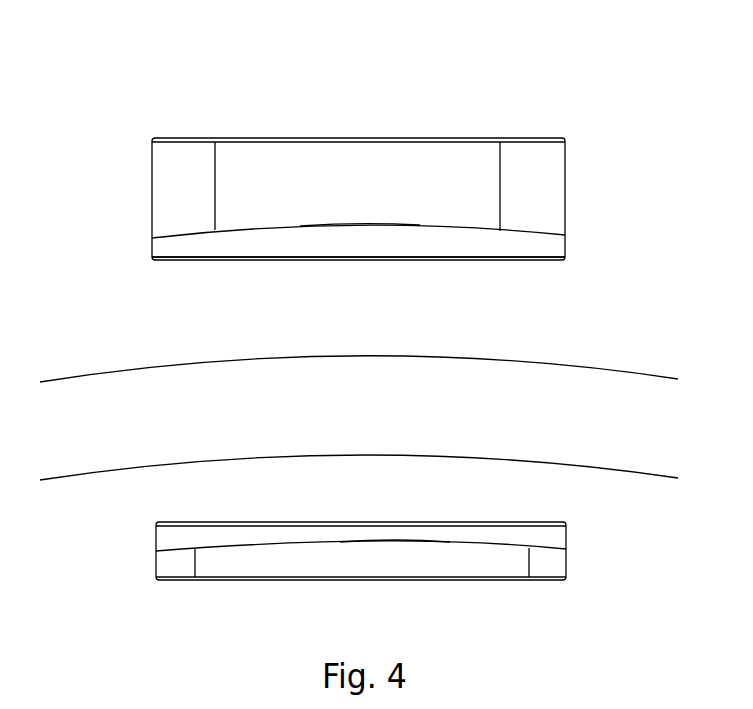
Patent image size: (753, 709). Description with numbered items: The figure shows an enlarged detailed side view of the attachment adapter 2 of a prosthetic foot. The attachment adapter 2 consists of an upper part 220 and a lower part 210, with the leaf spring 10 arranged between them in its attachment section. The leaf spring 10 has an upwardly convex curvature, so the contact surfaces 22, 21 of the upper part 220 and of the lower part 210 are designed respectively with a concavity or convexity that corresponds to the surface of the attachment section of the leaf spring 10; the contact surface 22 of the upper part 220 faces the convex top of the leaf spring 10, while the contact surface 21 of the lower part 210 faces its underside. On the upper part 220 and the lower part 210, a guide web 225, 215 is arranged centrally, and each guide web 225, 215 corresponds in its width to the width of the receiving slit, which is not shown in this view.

The attachment adapter 2 is at (397, 173).
The upper part 220 is at (550, 182).
The guide web 225 is at (550, 246).
The contact surface 22 is at (373, 226).
The leaf spring 10 is at (71, 386).
The contact surface 21 is at (405, 540).
The lower part 210 is at (224, 560).
The guide web 215 is at (552, 538).